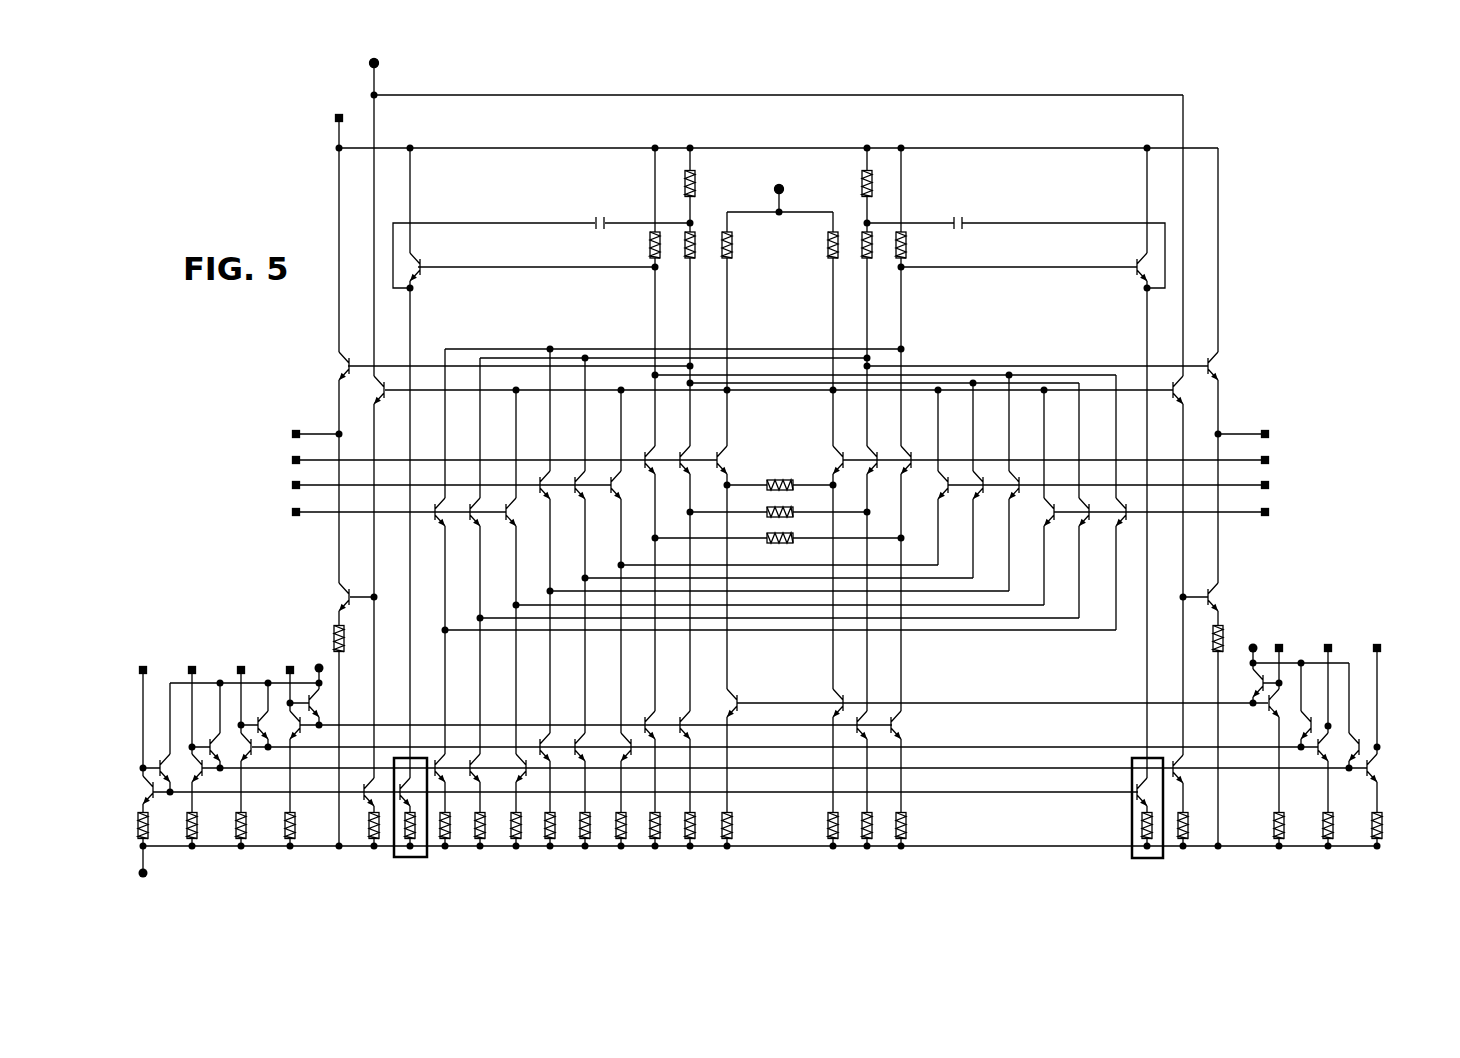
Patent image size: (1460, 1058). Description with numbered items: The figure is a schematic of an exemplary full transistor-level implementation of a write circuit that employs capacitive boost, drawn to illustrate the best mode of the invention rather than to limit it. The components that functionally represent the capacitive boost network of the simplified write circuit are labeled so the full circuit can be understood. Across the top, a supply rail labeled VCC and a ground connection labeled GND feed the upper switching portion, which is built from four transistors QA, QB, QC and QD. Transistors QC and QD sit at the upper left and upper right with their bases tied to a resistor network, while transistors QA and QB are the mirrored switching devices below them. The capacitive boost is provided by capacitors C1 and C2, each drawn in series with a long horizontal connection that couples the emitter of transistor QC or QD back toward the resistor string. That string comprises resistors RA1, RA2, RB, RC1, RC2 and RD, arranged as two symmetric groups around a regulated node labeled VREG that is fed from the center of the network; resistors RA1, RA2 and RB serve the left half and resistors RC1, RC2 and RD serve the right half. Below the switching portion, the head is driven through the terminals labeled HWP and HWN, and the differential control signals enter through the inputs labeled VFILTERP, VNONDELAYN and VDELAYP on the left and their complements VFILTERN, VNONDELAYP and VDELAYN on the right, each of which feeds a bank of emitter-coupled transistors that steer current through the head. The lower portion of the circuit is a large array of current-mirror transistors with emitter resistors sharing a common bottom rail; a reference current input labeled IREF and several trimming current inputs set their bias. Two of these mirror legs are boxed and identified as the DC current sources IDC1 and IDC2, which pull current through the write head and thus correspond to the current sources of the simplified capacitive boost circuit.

The capacitor C1 is at (541, 240).
The capacitor C2 is at (1016, 240).
The resistor RA1 is at (635, 248).
The resistor RA2 is at (709, 185).
The resistor RB is at (698, 264).
The resistor RC1 is at (921, 248).
The resistor RC2 is at (845, 185).
The resistor RD is at (863, 264).
The transistor QA is at (325, 366).
The transistor QB is at (1228, 368).
The transistor QC is at (429, 278).
The transistor QD is at (1125, 278).
The current source IDC1 is at (411, 858).
The current source IDC2 is at (1146, 858).
The ground terminal GND is at (786, 345).
The supply voltage terminal VCC is at (330, 103).
The regulated voltage terminal VREG is at (775, 175).
The input HWP is at (269, 436).
The input HWN is at (1288, 436).
The filter output VFILTERP is at (251, 460).
The non-delayed output VNONDELAYN is at (230, 485).
The delayed output VDELAYP is at (251, 512).
The filter output VFILTERN is at (1311, 460).
The non-delayed output VNONDELAYP is at (1330, 485).
The delayed output VDELAYN is at (1311, 512).
The reference current input IREF is at (143, 645).